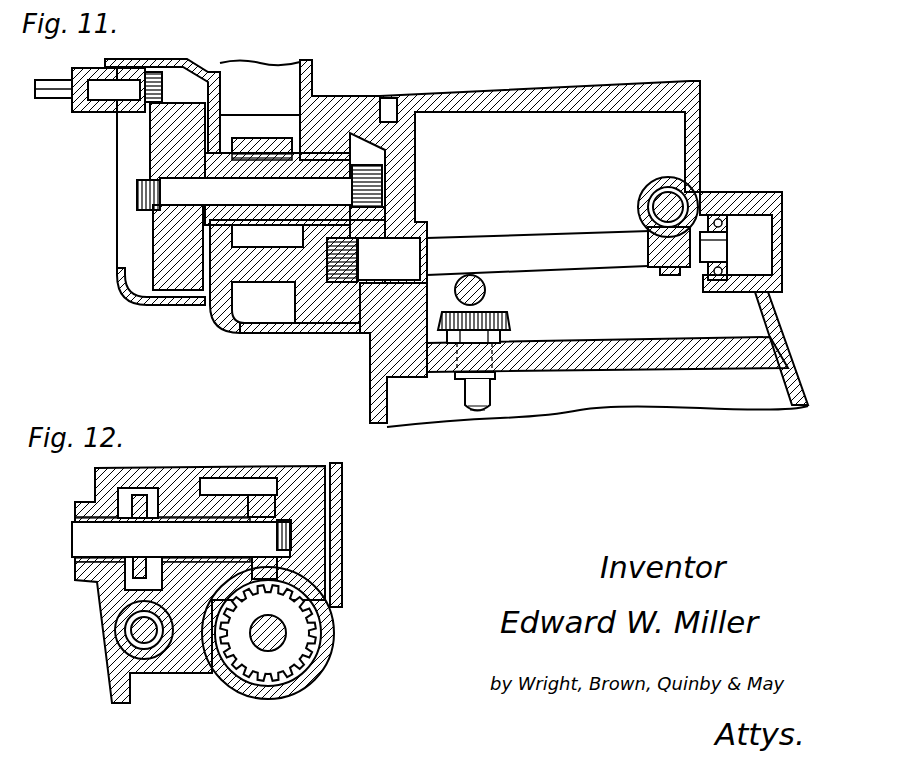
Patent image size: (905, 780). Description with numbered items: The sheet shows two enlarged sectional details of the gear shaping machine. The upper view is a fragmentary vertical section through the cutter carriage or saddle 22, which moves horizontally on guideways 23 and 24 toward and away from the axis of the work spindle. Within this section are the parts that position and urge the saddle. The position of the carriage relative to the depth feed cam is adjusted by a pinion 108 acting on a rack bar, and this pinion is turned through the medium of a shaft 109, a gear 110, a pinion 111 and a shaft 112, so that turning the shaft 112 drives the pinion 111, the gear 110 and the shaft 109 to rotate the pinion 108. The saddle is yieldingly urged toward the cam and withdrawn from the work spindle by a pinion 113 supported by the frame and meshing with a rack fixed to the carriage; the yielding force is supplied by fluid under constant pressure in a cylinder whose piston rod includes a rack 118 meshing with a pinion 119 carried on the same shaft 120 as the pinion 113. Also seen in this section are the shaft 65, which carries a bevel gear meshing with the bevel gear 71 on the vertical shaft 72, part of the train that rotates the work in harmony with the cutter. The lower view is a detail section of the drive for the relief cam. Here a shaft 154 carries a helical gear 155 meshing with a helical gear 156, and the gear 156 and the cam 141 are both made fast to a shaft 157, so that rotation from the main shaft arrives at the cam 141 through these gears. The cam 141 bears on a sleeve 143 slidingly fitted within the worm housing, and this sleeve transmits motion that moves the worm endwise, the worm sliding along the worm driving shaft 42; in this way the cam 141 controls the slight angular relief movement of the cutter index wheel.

In FIG. 11, the cutter carriage or saddle 22 is at (230, 280).
In FIG. 11, the guideway 23 is at (362, 105).
In FIG. 11, the guideway 24 is at (300, 335).
In FIG. 12, the shaft 42 is at (135, 642).
In FIG. 11, the shaft 65 is at (486, 288).
In FIG. 11, the bevel gear 71 is at (502, 320).
In FIG. 11, the vertical shaft 72 is at (482, 402).
In FIG. 11, the pinion 108 is at (382, 178).
In FIG. 11, the shaft 109 is at (244, 194).
In FIG. 11, the gear 110 is at (165, 148).
In FIG. 11, the pinion 111 is at (156, 78).
In FIG. 11, the shaft 112 is at (55, 84).
In FIG. 11, the pinion 113 is at (345, 253).
In FIG. 11, the rack 118 is at (655, 213).
In FIG. 11, the pinion 119 is at (668, 276).
In FIG. 11, the shaft 120 is at (540, 246).
In FIG. 12, the cam 141 is at (140, 510).
In FIG. 12, the sleeve 143 is at (121, 632).
In FIG. 12, the shaft 154 is at (272, 632).
In FIG. 12, the helical gear 155 is at (286, 606).
In FIG. 12, the helical gear 156 is at (270, 494).
In FIG. 12, the shaft 157 is at (181, 539).